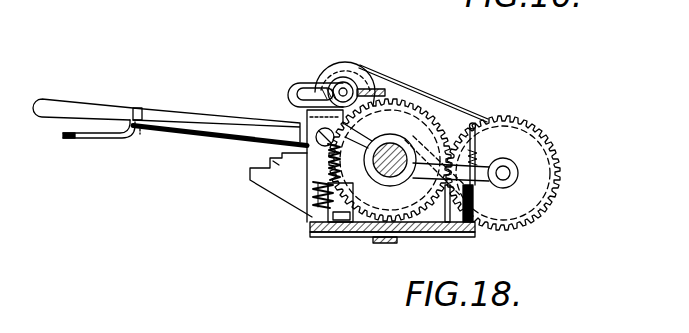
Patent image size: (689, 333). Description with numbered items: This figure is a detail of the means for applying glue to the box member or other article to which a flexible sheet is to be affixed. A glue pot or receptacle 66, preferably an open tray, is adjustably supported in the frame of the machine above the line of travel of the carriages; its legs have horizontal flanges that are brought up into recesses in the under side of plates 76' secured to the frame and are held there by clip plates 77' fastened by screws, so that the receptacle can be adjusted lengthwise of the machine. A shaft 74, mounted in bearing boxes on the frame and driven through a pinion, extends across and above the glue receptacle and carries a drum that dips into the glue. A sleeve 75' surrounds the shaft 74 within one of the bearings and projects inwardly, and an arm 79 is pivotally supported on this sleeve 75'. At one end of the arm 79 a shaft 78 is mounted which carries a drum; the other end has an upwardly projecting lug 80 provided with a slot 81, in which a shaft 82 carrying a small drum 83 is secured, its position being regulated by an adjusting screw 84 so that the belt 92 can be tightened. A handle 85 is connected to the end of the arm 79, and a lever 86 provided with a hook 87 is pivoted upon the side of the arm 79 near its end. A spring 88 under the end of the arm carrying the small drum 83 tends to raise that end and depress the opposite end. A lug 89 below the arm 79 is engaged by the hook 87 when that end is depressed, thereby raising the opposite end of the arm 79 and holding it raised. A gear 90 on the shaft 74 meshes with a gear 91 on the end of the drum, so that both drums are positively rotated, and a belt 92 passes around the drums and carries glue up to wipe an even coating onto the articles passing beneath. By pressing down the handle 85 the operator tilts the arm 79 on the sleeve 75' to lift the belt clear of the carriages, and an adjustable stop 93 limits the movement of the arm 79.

The glue pot or receptacle 66 is at (263, 182).
The shaft 74 is at (450, 157).
The sleeve 75' is at (447, 126).
The plates 76' is at (392, 248).
The clip plates 77' is at (381, 259).
The shaft 78 is at (503, 173).
The arm 79 is at (486, 120).
The lug 80 is at (300, 95).
The slot 81 is at (333, 90).
The shaft 82 is at (330, 80).
The small drum 83 is at (362, 70).
The adjusting screw 84 is at (364, 78).
The handle 85 is at (107, 113).
The lever 86 is at (140, 118).
The hook 87 is at (315, 180).
The spring 88 is at (323, 193).
The lug 89 is at (320, 203).
The gear 90 is at (405, 106).
The gear 91 is at (536, 127).
The belt 92 is at (400, 146).
The adjustable stop 93 is at (474, 143).